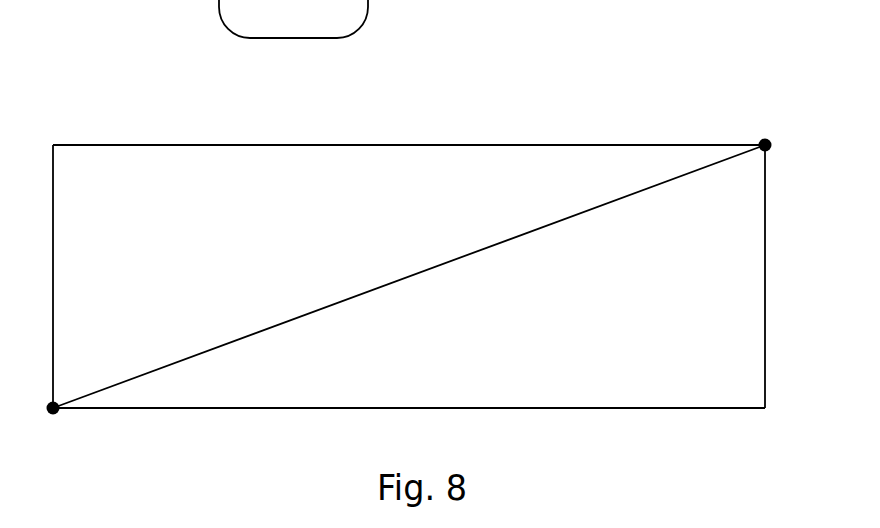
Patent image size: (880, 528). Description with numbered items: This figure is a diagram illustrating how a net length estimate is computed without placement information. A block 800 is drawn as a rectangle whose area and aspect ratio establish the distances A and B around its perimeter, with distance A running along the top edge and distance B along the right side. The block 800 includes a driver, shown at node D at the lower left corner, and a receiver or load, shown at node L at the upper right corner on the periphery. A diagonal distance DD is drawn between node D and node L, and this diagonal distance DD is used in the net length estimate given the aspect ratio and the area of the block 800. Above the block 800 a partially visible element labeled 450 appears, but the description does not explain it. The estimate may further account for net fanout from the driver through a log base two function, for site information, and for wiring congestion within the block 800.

The block 800 is at (409, 223).
The display unit block 450 is at (313, 22).
The distance A is at (409, 129).
The distance B is at (780, 276).
The diagonal distance DD is at (409, 276).
The node L is at (778, 135).
The node D is at (41, 417).